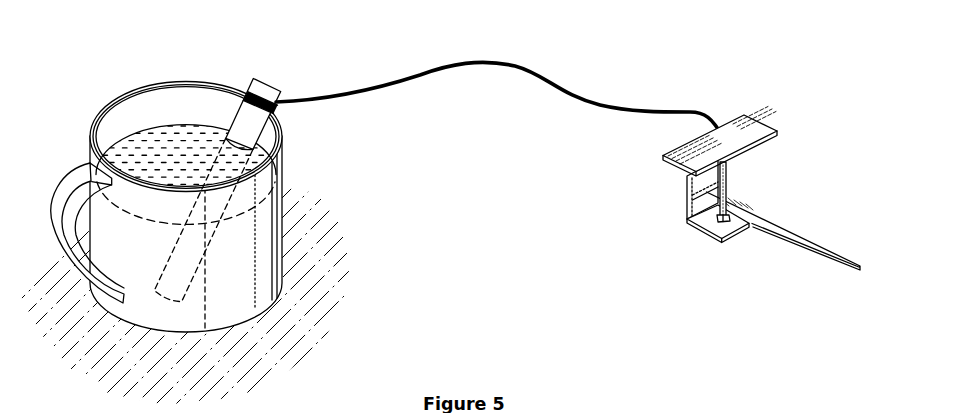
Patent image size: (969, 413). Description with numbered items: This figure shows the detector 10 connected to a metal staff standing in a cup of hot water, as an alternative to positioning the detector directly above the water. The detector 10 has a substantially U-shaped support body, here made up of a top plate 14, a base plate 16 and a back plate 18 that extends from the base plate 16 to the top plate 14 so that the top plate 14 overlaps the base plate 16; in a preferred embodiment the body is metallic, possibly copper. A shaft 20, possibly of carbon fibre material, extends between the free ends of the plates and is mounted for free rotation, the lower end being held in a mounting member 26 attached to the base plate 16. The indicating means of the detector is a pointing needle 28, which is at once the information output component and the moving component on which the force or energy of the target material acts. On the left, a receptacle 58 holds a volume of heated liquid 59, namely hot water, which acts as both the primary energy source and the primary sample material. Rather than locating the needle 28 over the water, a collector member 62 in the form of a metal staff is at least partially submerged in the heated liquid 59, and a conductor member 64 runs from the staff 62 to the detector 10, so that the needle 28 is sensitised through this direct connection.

The detector 10 is at (797, 129).
The top plate 14 is at (745, 119).
The base plate 16 is at (702, 218).
The back plate 18 is at (688, 190).
The shaft 20 is at (726, 167).
The mounting member 26 is at (736, 226).
The pointing needle 28 is at (784, 221).
The receptacle 58 is at (300, 147).
The heated liquid 59 is at (130, 143).
The collector member 62 is at (243, 111).
The conductor member 64 is at (494, 60).